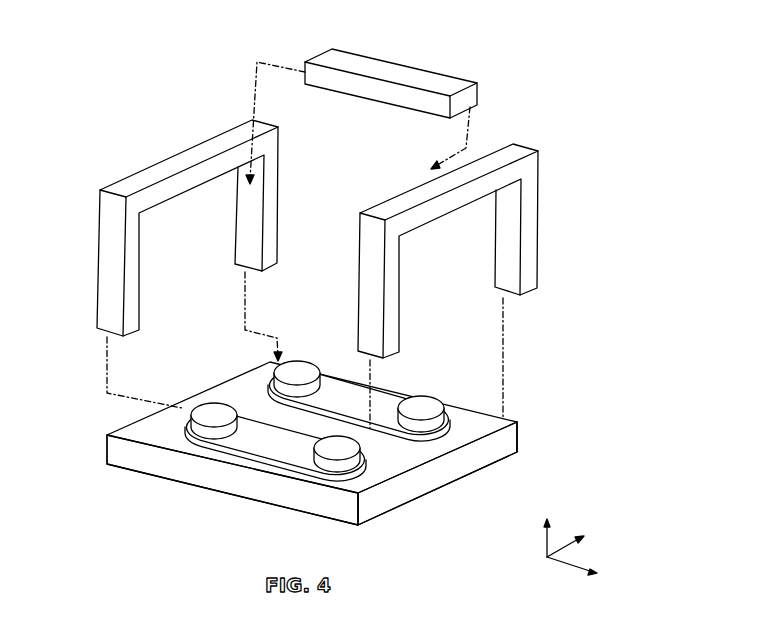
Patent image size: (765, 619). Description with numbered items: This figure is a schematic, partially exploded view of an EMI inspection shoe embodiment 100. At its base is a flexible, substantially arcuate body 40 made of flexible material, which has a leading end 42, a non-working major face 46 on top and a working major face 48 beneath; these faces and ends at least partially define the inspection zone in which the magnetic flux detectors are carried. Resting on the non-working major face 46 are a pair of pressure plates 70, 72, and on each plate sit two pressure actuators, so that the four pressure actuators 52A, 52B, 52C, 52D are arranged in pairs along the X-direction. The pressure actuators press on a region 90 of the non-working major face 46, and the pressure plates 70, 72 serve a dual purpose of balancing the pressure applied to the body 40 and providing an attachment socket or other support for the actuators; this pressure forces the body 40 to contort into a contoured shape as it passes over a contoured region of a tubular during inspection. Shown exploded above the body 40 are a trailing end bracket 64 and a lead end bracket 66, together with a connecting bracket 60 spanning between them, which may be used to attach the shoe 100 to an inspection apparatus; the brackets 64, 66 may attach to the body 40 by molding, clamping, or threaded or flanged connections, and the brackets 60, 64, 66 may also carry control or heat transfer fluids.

The EMI inspection shoe embodiment 100 is at (563, 82).
The flexible, substantially arcuate body 40 is at (341, 526).
The leading end 42 is at (490, 456).
The non-working major face 46 is at (514, 421).
The working major face 48 is at (263, 496).
The pressure actuator 52A is at (208, 409).
The pressure actuator 52B is at (353, 468).
The pressure actuator 52C is at (304, 361).
The pressure actuator 52D is at (424, 399).
The connecting bracket 60 is at (397, 67).
The trailing end bracket 64 is at (168, 159).
The lead end bracket 66 is at (515, 144).
The pressure plate 70 is at (255, 432).
The pressure plate 72 is at (343, 396).
The region of the non-working major face 90 is at (178, 423).